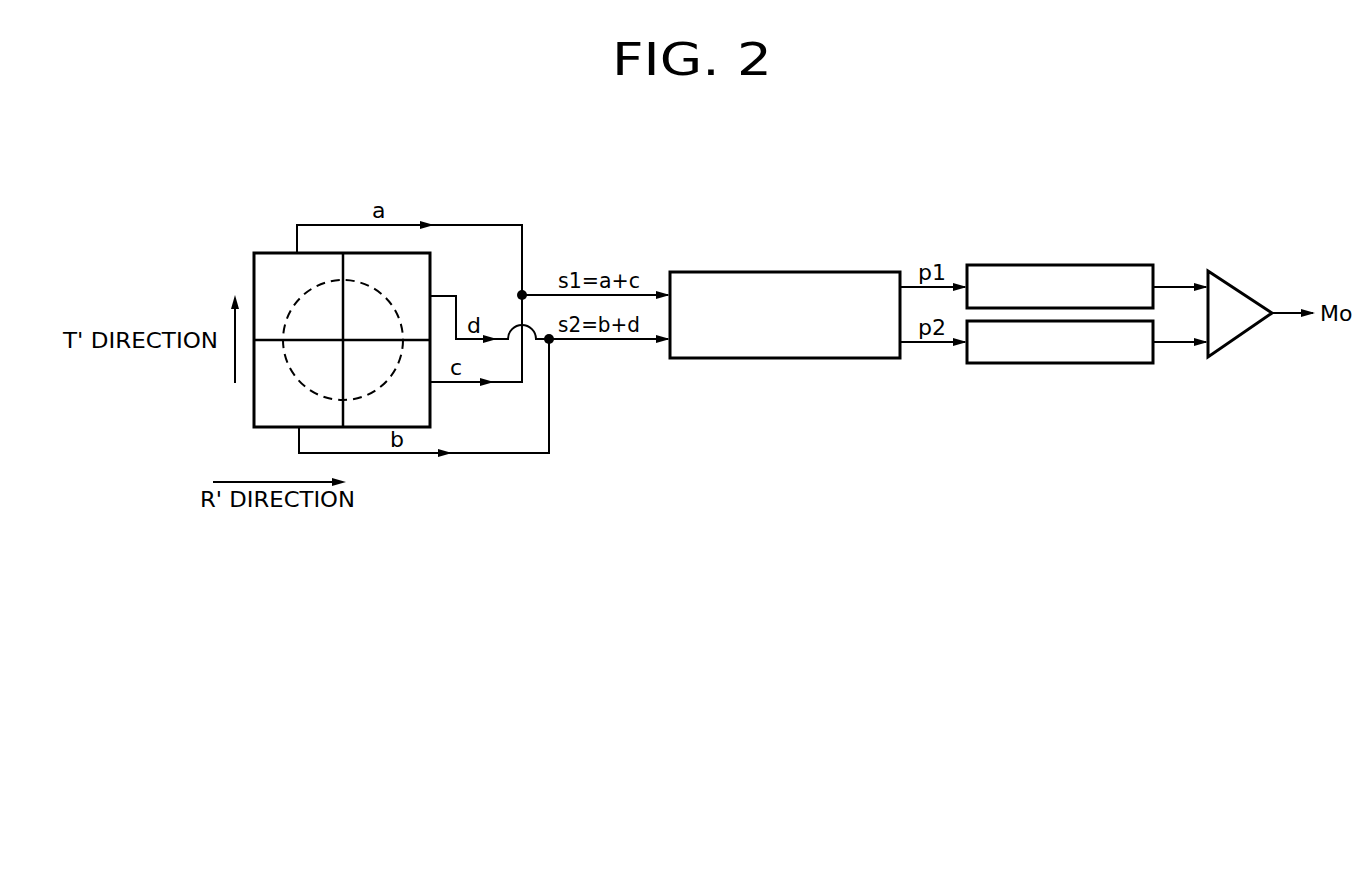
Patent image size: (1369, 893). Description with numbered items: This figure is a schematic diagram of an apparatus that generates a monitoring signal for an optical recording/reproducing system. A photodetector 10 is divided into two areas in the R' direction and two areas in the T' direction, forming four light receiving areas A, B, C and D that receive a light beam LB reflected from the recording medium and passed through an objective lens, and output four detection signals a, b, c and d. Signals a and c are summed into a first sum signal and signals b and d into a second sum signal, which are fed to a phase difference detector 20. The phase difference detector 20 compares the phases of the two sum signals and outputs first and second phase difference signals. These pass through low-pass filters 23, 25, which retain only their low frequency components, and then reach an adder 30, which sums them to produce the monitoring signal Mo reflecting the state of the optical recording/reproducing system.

The photodetector 10 is at (245, 234).
The light beam LB is at (323, 280).
The phase difference detector 20 is at (760, 358).
The low-pass filter 23 is at (1088, 265).
The low-pass filter 25 is at (1088, 363).
The adder 30 is at (1241, 334).